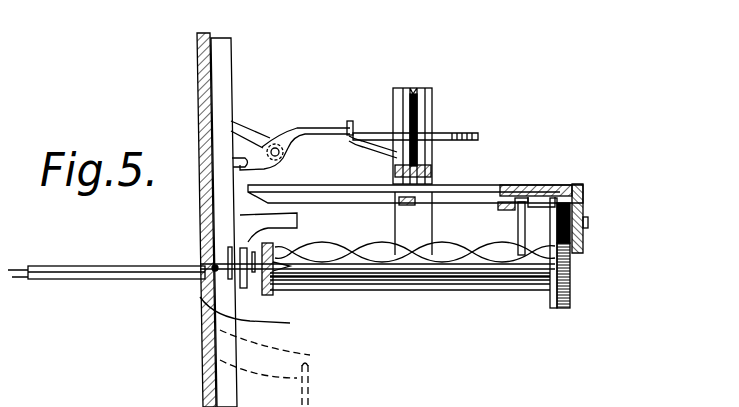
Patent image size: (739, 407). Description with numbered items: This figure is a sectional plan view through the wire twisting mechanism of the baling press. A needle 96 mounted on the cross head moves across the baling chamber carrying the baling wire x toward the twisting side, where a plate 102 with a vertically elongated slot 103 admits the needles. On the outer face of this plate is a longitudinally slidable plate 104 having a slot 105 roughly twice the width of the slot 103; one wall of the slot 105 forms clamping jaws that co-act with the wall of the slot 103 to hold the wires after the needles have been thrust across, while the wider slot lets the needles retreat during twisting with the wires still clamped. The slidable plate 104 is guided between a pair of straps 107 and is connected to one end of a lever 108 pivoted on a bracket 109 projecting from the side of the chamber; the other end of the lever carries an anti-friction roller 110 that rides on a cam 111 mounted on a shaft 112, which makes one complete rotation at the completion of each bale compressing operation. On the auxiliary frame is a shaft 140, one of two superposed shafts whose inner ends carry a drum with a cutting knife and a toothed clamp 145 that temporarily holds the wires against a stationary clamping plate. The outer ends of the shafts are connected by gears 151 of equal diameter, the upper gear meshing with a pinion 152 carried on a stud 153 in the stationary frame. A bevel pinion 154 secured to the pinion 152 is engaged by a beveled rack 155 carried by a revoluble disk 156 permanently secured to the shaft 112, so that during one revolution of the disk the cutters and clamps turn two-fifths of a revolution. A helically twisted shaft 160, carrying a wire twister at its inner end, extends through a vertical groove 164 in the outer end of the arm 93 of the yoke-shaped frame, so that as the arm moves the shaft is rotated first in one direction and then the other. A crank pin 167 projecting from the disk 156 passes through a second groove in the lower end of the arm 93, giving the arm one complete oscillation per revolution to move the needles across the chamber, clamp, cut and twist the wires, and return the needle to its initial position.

The arm 93 is at (525, 255).
The needle 96 is at (100, 263).
The baling wire x is at (40, 280).
The plate 102 is at (215, 233).
The slot 103 is at (188, 273).
The longitudinally slidable plate 104 is at (212, 205).
The slot 105 is at (208, 285).
The straps 107 is at (263, 346).
The lever 108 is at (297, 128).
The bracket 109 is at (241, 128).
The anti-friction roller 110 is at (350, 121).
The cam 111 is at (446, 133).
The shaft 112 is at (415, 88).
The shaft 140 is at (392, 287).
The toothed clamp 145 is at (265, 298).
The gears 151 is at (572, 298).
The pinion 152 is at (575, 235).
The stud 153 is at (518, 225).
The bevel pinion 154 is at (589, 217).
The beveled rack 155 is at (549, 184).
The revoluble disk 156 is at (475, 185).
The helically twisted shaft 160 is at (378, 240).
The vertical groove 164 is at (520, 245).
The crank pin 167 is at (530, 197).